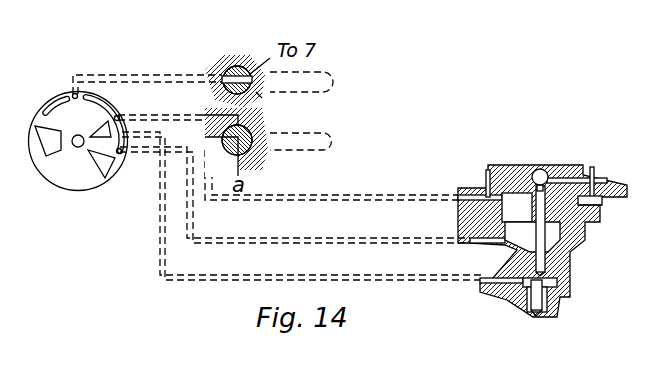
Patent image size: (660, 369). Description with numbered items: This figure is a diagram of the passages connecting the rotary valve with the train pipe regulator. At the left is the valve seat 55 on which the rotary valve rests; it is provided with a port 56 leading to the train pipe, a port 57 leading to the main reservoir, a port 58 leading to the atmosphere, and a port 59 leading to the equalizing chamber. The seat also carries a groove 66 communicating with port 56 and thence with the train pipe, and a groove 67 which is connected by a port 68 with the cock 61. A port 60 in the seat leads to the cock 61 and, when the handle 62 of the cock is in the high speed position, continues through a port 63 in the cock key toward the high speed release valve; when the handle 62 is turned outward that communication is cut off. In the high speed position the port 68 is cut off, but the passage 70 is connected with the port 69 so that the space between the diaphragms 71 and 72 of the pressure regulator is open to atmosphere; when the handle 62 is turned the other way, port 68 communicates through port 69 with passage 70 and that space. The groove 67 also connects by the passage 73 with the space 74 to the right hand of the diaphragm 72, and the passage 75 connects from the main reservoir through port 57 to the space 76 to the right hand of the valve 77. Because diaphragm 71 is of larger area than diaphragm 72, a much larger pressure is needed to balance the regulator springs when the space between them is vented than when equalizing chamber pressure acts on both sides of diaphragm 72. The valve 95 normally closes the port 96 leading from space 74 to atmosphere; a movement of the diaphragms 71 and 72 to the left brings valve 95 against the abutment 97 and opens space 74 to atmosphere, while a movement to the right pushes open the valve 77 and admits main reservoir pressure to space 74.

The valve seat 55 is at (55, 179).
The port 56 is at (50, 141).
The port 57 is at (101, 130).
The port 58 is at (107, 168).
The port 59 is at (77, 147).
The port 60 is at (95, 74).
The cock 61 is at (262, 98).
The handle 62 is at (333, 140).
The port 63 is at (226, 76).
The groove 66 is at (56, 105).
The groove 67 is at (112, 110).
The port 68 is at (173, 114).
The port 69 is at (245, 148).
The passage 70 is at (318, 203).
The diaphragm 71 is at (600, 200).
The diaphragm 72 is at (584, 205).
The passage 73 is at (144, 155).
The space 74 is at (566, 240).
The passage 75 is at (167, 135).
The space 76 is at (560, 298).
The valve 77 is at (558, 281).
The valve 95 is at (470, 215).
The port 96 is at (576, 177).
The abutment 97 is at (537, 168).